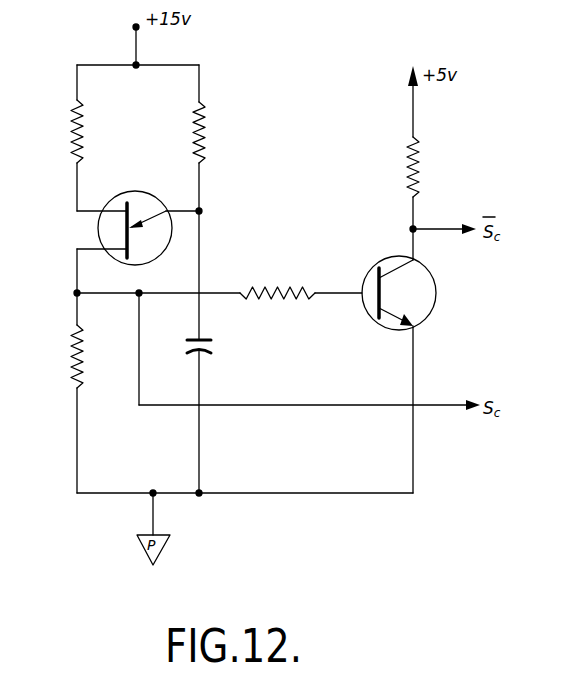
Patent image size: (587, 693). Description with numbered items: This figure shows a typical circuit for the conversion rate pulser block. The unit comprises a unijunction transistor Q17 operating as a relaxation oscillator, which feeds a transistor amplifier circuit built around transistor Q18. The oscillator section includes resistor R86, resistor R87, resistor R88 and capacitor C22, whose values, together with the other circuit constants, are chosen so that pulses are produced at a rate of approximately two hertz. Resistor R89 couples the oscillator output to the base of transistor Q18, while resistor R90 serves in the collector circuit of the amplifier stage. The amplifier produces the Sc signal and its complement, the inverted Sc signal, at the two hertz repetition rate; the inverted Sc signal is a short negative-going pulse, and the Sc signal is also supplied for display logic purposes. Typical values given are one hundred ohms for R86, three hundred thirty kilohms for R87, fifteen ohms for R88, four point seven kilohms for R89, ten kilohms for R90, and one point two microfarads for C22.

The resistor R86 is at (98, 138).
The resistor R87 is at (221, 202).
The resistor R88 is at (97, 393).
The resistor R89 is at (301, 281).
The resistor R90 is at (435, 154).
The unijunction transistor Q17 is at (139, 242).
The transistor Q18 is at (417, 361).
The capacitor C22 is at (219, 416).